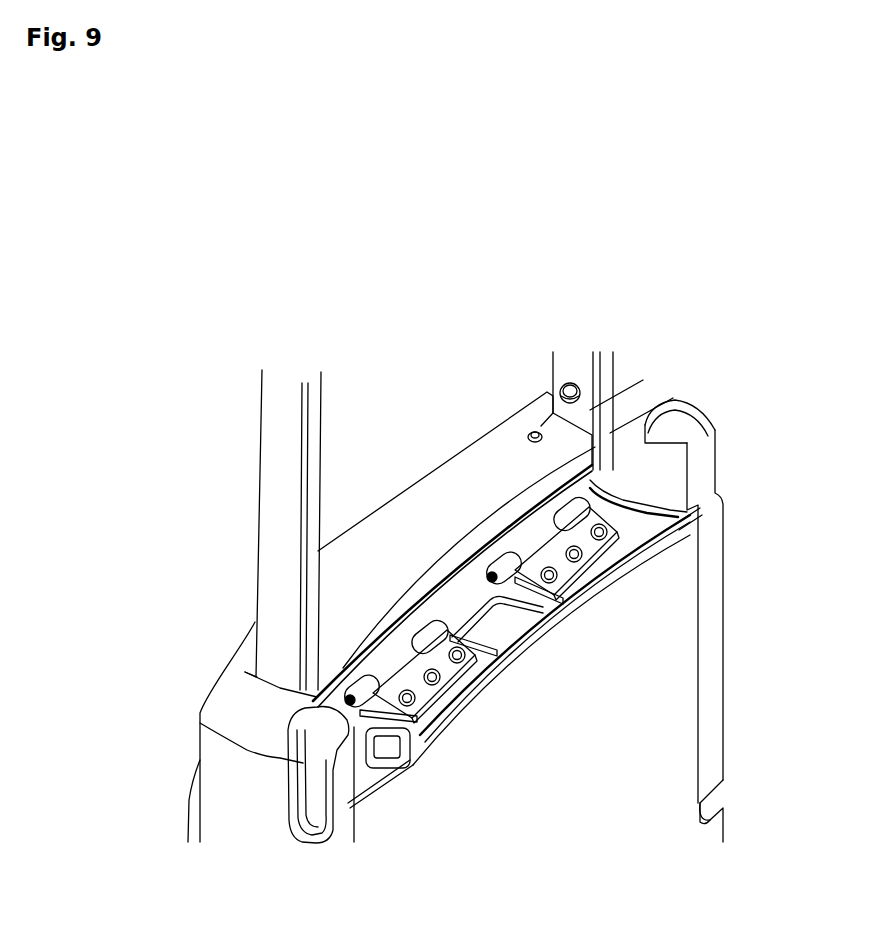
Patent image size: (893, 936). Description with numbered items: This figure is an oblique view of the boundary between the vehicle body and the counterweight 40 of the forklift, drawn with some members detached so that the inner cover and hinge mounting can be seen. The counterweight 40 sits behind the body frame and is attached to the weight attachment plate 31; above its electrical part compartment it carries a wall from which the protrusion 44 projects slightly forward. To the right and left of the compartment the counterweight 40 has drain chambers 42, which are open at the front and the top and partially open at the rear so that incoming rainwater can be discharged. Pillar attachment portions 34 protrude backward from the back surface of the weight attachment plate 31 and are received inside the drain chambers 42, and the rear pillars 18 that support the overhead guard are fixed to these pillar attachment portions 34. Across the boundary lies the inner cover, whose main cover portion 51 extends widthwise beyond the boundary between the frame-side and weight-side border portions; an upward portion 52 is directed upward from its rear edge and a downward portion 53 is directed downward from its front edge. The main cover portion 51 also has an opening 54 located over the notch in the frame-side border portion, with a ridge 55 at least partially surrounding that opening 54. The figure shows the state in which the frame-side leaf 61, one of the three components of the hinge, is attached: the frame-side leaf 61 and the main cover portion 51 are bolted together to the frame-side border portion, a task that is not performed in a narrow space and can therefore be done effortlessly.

The rear pillar 18 is at (560, 373).
The weight attachment plate 31 is at (587, 762).
The pillar attachment portion 34 is at (677, 523).
The counterweight 40 is at (213, 748).
The drain chamber 42 is at (664, 499).
The protrusion 44 is at (455, 513).
The main cover portion 51 is at (557, 600).
The upward portion 52 is at (600, 470).
The downward portion 53 is at (487, 680).
The opening 54 is at (490, 618).
The ridge 55 is at (482, 660).
The frame-side leaf 61 is at (597, 522).